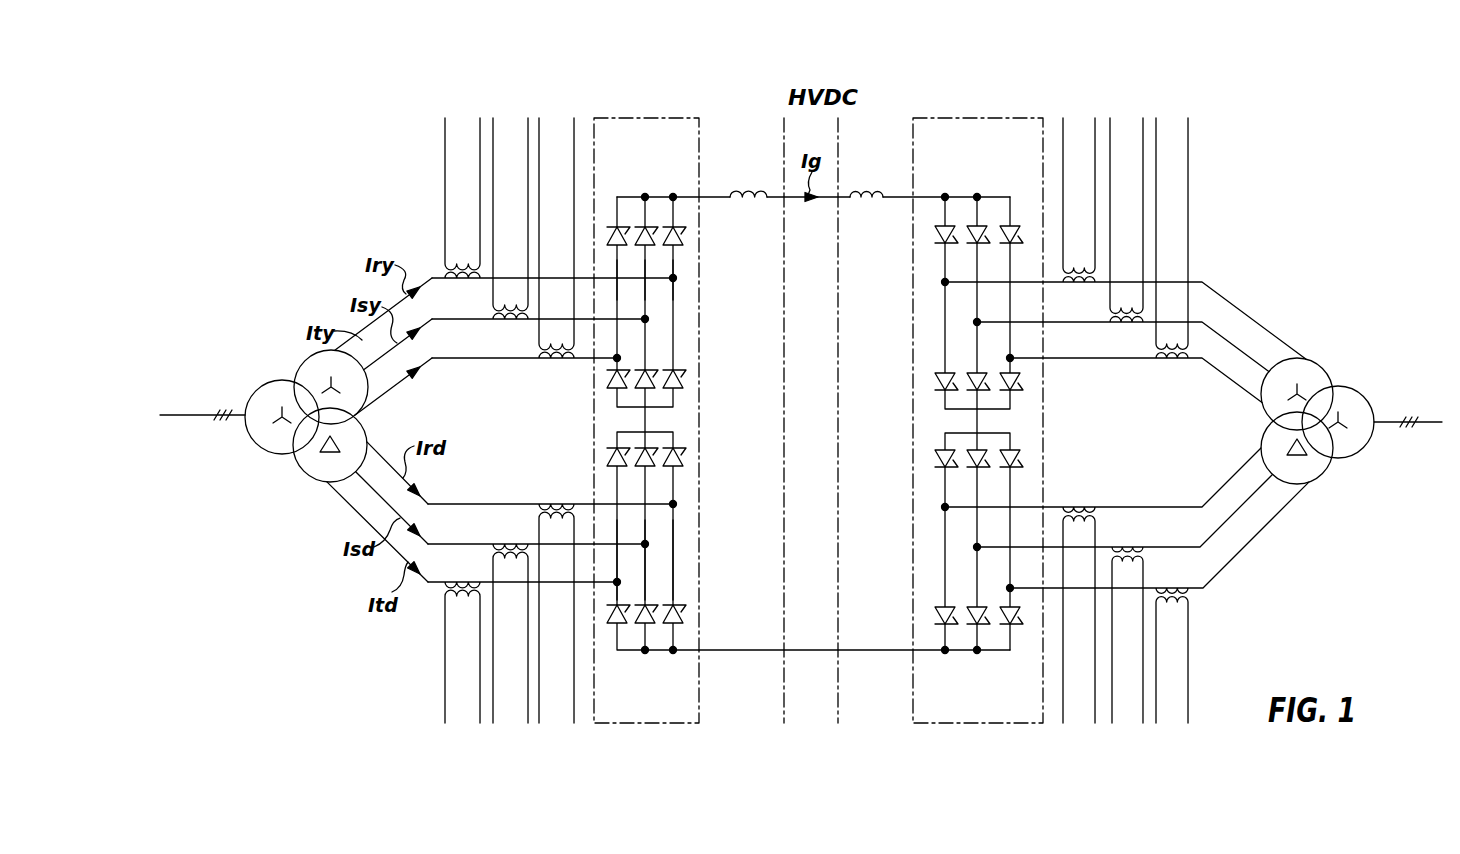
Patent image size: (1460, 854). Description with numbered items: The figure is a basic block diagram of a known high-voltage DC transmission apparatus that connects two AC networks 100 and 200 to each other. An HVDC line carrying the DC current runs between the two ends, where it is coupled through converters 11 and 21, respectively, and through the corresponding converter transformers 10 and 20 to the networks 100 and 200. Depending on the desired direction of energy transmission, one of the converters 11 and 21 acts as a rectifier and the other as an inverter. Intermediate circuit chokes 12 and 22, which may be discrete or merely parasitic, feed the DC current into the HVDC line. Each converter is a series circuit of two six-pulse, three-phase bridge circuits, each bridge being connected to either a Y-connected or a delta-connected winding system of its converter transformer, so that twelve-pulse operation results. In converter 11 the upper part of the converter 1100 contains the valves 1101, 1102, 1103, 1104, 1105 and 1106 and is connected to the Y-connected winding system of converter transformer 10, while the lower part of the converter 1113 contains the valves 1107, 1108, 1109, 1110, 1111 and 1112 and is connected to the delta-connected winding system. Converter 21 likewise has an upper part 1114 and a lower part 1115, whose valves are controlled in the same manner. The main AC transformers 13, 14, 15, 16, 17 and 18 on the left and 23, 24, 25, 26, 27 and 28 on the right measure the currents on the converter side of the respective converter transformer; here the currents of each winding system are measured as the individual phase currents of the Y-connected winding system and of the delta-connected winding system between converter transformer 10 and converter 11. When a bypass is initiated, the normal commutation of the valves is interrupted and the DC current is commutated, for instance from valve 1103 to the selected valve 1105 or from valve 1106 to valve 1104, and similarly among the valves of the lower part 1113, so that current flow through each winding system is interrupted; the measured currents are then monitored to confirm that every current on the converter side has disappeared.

The AC network 100 is at (197, 414).
The converter transformer 10 is at (274, 388).
The converter 11 is at (670, 130).
The intermediate circuit choke 12 is at (755, 196).
The main AC transformer 13 is at (465, 280).
The main AC transformer 14 is at (504, 320).
The main AC transformer 15 is at (546, 360).
The main AC transformer 16 is at (470, 582).
The main AC transformer 17 is at (510, 544).
The main AC transformer 18 is at (555, 504).
The upper part of the converter 1100 is at (606, 294).
The valve 1101 is at (615, 227).
The valve 1102 is at (617, 370).
The valve 1103 is at (643, 227).
The valve 1104 is at (645, 372).
The valve 1105 is at (672, 227).
The valve 1106 is at (673, 390).
The valve 1107 is at (617, 468).
The valve 1108 is at (645, 462).
The valve 1109 is at (673, 456).
The valve 1110 is at (617, 626).
The valve 1111 is at (647, 626).
The valve 1112 is at (673, 614).
The lower part of the converter 1113 is at (606, 568).
The converter transformer 20 is at (1352, 390).
The AC network 200 is at (1425, 420).
The converter 21 is at (955, 133).
The intermediate circuit choke 22 is at (884, 196).
The main AC transformer 23 is at (1090, 287).
The main AC transformer 24 is at (1121, 323).
The main AC transformer 25 is at (1169, 360).
The main AC transformer 26 is at (1160, 588).
The main AC transformer 27 is at (1125, 547).
The main AC transformer 28 is at (1080, 506).
The upper part of converter 21 1114 is at (940, 258).
The lower part of converter 21 1115 is at (940, 564).